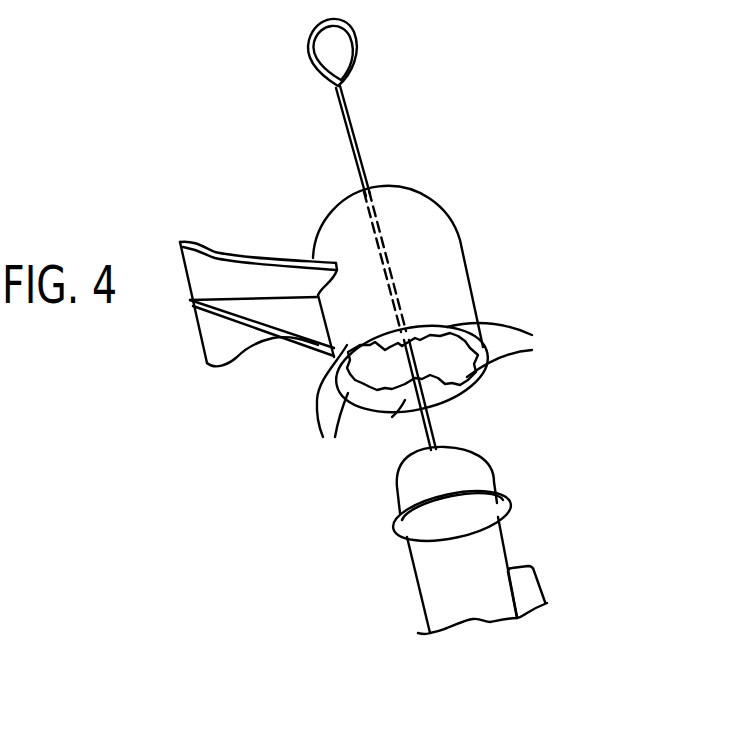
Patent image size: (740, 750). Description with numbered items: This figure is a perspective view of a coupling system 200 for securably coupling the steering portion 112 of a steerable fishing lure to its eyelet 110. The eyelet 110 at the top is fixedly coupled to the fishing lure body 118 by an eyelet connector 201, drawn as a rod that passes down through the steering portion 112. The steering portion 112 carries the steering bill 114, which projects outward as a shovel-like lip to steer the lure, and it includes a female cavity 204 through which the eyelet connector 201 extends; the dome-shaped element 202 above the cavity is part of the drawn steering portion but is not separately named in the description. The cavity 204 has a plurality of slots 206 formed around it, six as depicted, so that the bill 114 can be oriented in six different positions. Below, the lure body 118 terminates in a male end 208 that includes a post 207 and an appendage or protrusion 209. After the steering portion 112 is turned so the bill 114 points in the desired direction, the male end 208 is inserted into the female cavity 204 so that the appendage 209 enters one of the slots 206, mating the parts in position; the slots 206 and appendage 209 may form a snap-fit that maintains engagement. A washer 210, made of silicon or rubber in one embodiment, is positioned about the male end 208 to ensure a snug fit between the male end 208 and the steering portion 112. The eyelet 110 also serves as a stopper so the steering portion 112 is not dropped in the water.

The eyelet 110 is at (358, 45).
The steering portion 112 is at (258, 334).
The steering bill 114 is at (252, 258).
The fishing lure body 118 is at (510, 647).
The coupling system 200 is at (476, 320).
The eyelet connector 201 is at (417, 437).
The dome cover 202 is at (470, 275).
The female cavity 204 is at (430, 358).
The slots 206 is at (392, 417).
The post 207 is at (488, 467).
The male end 208 is at (492, 569).
The appendage 209 is at (530, 583).
The washer 210 is at (392, 527).